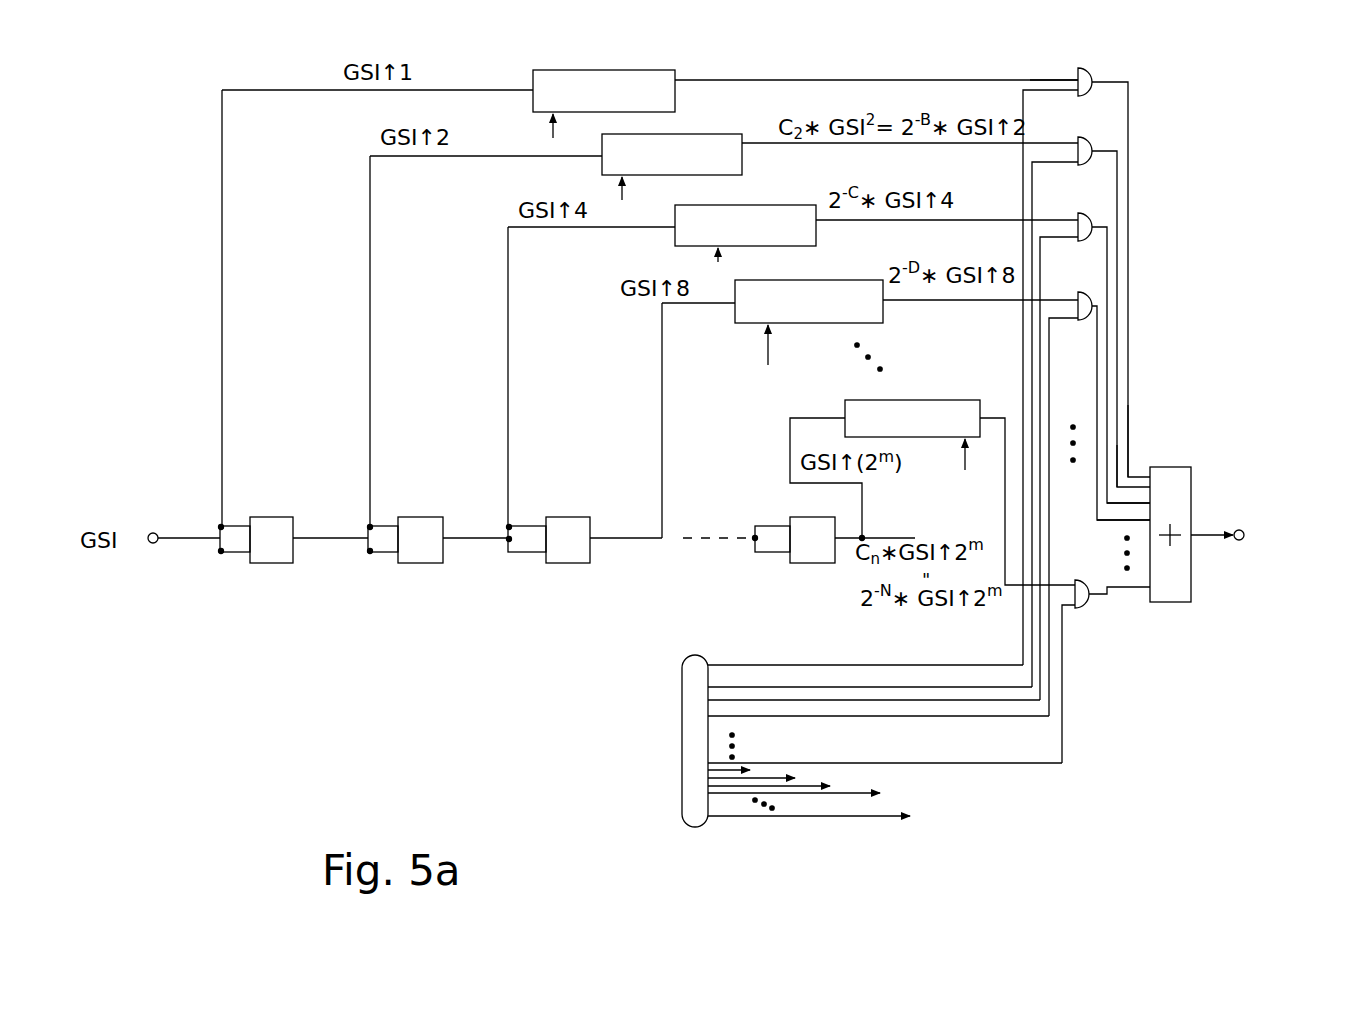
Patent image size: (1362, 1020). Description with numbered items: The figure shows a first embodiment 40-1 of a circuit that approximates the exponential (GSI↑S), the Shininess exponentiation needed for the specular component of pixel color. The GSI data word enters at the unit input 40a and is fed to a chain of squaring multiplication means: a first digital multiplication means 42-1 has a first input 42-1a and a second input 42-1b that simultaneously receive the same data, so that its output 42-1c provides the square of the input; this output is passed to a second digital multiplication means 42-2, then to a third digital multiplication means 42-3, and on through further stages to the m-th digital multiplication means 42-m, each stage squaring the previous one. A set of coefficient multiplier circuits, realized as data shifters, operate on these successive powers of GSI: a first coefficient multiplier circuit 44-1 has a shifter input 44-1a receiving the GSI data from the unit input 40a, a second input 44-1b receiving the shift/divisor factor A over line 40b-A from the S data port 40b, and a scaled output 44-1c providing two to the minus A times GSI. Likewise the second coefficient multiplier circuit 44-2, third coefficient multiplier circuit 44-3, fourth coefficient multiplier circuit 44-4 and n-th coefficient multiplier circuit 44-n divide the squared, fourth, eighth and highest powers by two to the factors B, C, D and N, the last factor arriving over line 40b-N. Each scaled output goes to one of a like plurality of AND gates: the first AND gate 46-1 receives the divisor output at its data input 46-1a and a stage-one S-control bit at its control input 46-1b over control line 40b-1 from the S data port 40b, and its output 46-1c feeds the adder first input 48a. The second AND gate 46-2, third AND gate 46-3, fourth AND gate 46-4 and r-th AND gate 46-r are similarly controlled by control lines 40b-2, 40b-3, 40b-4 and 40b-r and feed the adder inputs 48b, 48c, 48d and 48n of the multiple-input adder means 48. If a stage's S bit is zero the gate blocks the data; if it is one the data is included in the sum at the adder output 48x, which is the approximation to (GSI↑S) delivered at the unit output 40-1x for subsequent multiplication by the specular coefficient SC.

The first embodiment of the exponential approximator circuit 40-1 is at (332, 738).
The unit input 40a is at (148, 545).
The unit output 40-1x is at (1244, 532).
The S data port 40b is at (682, 678).
The first-stage S-control line 40b-1 is at (750, 664).
The second-stage S-control line 40b-2 is at (814, 687).
The third-stage S-control line 40b-3 is at (897, 700).
The fourth-stage S-control line 40b-4 is at (938, 716).
The r-th stage S-control line 40b-r is at (1012, 764).
The shift factor A control line 40b-A is at (728, 768).
The shift factor N control line 40b-N is at (818, 816).
The first digital multiplication means 42-1 is at (278, 517).
The first input of first multiplication means 42-1a is at (236, 524).
The second input of first multiplication means 42-1b is at (232, 553).
The output of first multiplication means 42-1c is at (318, 542).
The second digital multiplication means 42-2 is at (428, 517).
The third digital multiplication means 42-3 is at (574, 517).
The m-th digital multiplication means 42-m is at (800, 517).
The first coefficient multiplier circuit 44-1 is at (632, 70).
The first shifter input 44-1a is at (515, 88).
The first shifter second input 44-1b is at (551, 125).
The first shifter scaled output 44-1c is at (686, 78).
The second coefficient multiplier circuit 44-2 is at (701, 134).
The third coefficient multiplier circuit 44-3 is at (742, 205).
The fourth coefficient multiplier circuit 44-4 is at (740, 323).
The n-th coefficient multiplier circuit 44-n is at (920, 400).
The first AND gate 46-1 is at (1095, 70).
The first AND gate data input 46-1a is at (1040, 78).
The first AND gate control input 46-1b is at (1050, 91).
The first AND gate output 46-1c is at (1100, 82).
The second AND gate 46-2 is at (1098, 146).
The third AND gate 46-3 is at (1098, 216).
The fourth AND gate 46-4 is at (1095, 290).
The r-th AND gate 46-r is at (1085, 610).
The multiple-input adder means 48 is at (1191, 485).
The adder first input 48a is at (1129, 405).
The adder second input 48b is at (1118, 445).
The adder third input 48c is at (1120, 507).
The adder fourth input 48d is at (1097, 512).
The adder n-th input 48n is at (1107, 590).
The adder output 48x is at (1198, 543).